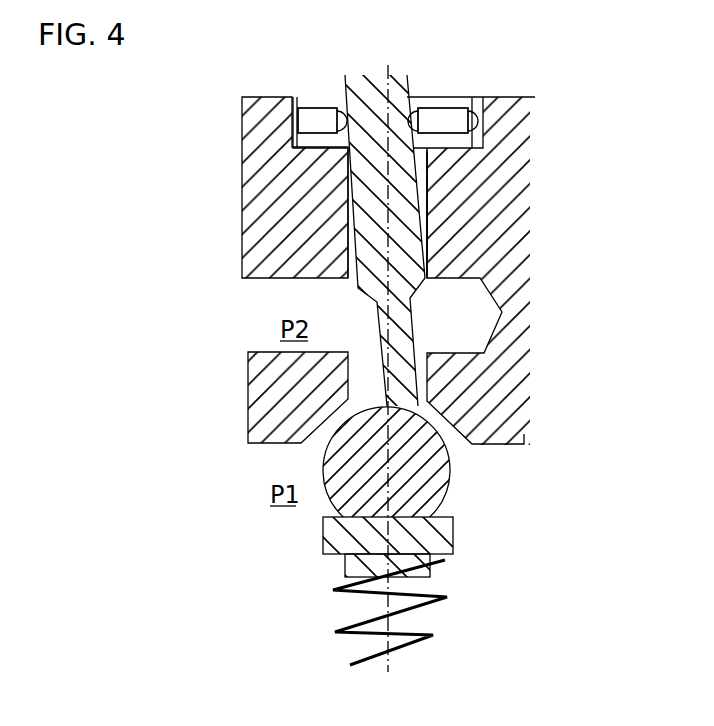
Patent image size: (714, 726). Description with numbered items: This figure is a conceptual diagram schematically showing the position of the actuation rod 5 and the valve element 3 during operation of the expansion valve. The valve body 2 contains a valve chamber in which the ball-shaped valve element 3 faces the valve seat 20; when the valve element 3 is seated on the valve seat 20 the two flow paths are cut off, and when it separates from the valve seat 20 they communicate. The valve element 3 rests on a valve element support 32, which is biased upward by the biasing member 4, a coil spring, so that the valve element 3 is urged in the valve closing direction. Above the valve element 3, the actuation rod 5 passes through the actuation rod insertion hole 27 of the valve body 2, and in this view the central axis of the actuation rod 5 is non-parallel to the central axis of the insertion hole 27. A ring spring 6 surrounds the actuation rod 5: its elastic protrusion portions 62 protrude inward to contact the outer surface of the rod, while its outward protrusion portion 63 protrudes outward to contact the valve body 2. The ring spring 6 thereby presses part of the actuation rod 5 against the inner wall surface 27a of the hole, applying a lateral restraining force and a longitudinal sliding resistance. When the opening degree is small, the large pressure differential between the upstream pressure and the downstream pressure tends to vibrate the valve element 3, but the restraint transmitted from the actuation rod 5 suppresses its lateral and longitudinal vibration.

The valve body 2 is at (502, 403).
The valve element 3 is at (423, 478).
The biasing member 4 is at (433, 635).
The actuation rod 5 is at (407, 220).
The ring spring 6 is at (323, 110).
The valve seat 20 is at (322, 428).
The actuation rod insertion hole 27 is at (354, 264).
The inner wall surface 27a is at (425, 163).
The valve element support 32 is at (433, 537).
The elastic protrusion portions 62 is at (307, 110).
The outward protrusion portion 63 is at (477, 112).